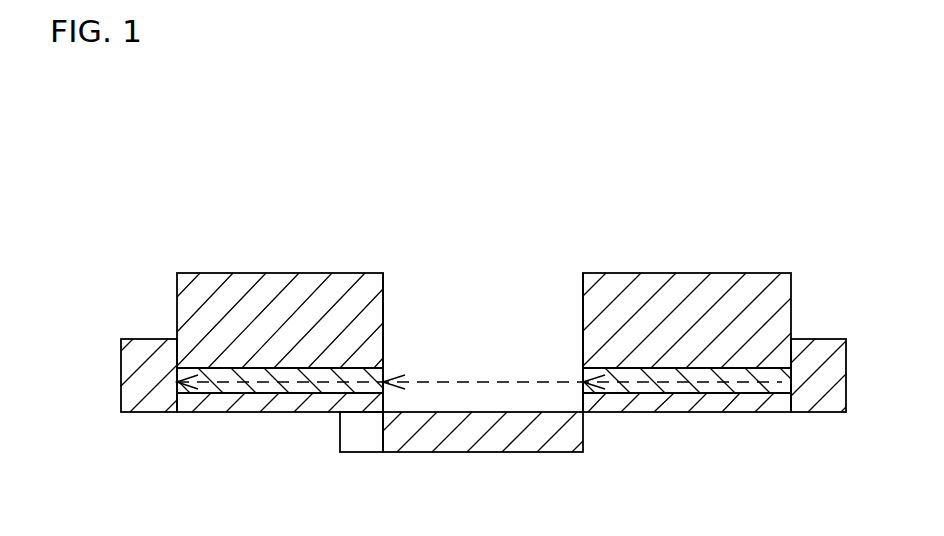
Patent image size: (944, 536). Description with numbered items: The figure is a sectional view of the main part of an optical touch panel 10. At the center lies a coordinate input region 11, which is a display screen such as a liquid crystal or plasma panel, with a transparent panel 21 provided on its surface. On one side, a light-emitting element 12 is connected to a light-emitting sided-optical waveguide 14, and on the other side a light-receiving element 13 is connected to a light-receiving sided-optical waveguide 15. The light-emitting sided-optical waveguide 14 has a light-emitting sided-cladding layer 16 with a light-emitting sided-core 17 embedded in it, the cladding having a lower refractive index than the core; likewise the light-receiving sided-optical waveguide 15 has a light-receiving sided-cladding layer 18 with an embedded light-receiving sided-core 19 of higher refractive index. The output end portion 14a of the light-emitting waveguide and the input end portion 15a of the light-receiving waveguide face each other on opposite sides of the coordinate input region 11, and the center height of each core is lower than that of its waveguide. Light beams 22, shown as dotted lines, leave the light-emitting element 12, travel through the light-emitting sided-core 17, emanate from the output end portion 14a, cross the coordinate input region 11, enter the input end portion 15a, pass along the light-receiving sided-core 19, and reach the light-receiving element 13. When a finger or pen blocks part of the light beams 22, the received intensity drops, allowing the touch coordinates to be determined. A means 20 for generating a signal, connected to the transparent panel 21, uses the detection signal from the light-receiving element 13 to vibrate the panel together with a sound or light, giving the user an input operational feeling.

The optical touch panel 10 is at (493, 129).
The coordinate input region 11 is at (392, 272).
The light-emitting element 12 is at (816, 355).
The light-receiving element 13 is at (153, 347).
The light-emitting sided-optical waveguide 14 is at (587, 257).
The output end portion 14a is at (583, 348).
The light-receiving sided-optical waveguide 15 is at (180, 257).
The input end portion 15a is at (383, 347).
The light-emitting sided-cladding layer 16 is at (777, 323).
The light-emitting sided-core 17 is at (743, 392).
The light-receiving sided-cladding layer 18 is at (190, 307).
The light-receiving sided-core 19 is at (245, 394).
The means for generating a signal 20 is at (365, 440).
The transparent panel 21 is at (493, 440).
The light beams 22 is at (461, 382).